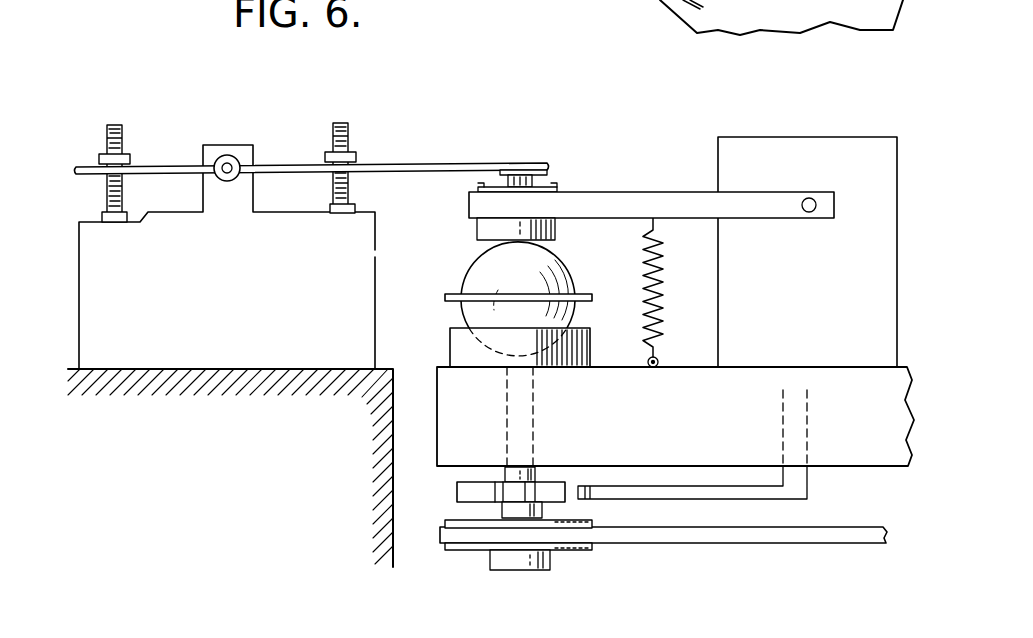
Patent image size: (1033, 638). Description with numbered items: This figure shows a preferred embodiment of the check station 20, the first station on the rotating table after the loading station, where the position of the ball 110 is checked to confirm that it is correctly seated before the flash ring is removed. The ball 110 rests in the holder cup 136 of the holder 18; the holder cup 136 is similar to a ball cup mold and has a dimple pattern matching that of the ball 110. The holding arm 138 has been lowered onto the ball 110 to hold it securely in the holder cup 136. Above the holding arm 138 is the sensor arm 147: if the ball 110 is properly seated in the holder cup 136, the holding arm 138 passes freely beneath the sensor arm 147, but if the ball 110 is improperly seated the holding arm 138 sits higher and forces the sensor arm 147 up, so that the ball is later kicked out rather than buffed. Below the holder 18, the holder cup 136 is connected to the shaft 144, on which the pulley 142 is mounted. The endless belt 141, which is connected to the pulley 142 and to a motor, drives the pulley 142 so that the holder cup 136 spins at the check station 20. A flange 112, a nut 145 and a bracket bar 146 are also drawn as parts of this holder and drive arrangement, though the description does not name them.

The check station 20 is at (205, 112).
The sensor arm 147 is at (394, 165).
The holder 18 is at (665, 145).
The holding arm 138 is at (586, 197).
The ball 110 is at (555, 255).
The flange 112 is at (587, 293).
The holder cup 136 is at (452, 342).
The shaft 144 is at (541, 476).
The nut 145 is at (457, 493).
The bracket bar 146 is at (812, 490).
The endless belt 141 is at (760, 533).
The pulley 142 is at (579, 550).